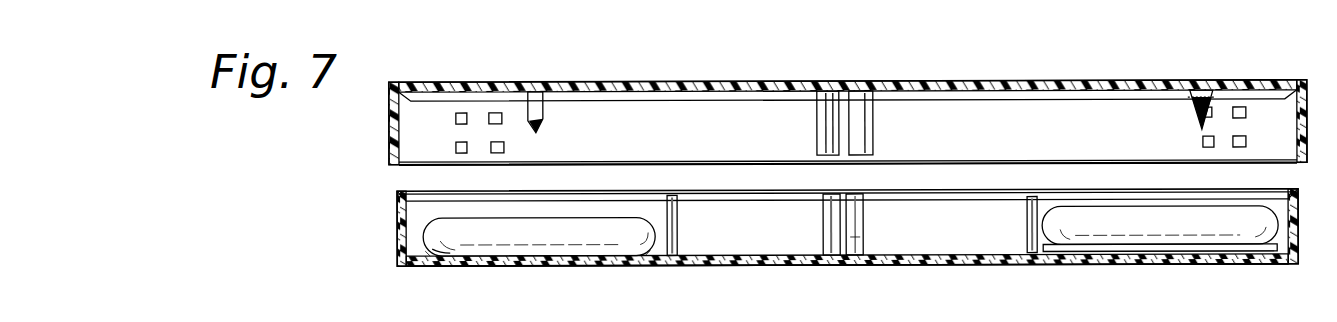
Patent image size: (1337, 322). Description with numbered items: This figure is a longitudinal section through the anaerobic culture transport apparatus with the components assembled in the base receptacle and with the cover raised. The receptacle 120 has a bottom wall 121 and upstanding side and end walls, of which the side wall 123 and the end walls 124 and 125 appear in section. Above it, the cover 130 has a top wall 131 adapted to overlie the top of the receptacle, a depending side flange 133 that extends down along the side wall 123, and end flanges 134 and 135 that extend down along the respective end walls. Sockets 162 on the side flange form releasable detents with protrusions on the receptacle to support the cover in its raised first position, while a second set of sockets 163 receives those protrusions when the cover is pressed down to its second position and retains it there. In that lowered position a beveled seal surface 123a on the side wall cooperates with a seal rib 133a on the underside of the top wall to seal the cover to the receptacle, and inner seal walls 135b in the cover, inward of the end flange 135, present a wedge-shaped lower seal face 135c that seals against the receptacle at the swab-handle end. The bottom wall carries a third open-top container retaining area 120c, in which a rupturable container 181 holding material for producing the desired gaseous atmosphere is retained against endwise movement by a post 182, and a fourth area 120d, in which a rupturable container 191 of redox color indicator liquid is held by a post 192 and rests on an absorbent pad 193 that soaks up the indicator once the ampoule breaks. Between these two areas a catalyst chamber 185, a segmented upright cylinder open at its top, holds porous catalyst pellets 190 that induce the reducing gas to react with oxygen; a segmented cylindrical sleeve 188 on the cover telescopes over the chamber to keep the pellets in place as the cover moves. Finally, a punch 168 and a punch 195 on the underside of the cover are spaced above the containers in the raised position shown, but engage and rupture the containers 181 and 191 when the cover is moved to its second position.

The cover 130 is at (903, 72).
The top wall 131 is at (968, 82).
The side flange 133 is at (1042, 118).
The seal rib 133a is at (703, 112).
The end flange 134 is at (1306, 100).
The end flange 135 is at (389, 136).
The inner seal walls 135b is at (421, 319).
The wedge-shaped lower seal face 135c is at (470, 321).
The second set of sockets 163 is at (497, 112).
The punch 168 is at (548, 118).
The sockets 162 is at (504, 151).
The segmented cylindrical sleeve 188 is at (873, 136).
The punch 195 is at (1200, 128).
The receptacle 120 is at (900, 268).
The bottom wall 121 is at (748, 262).
The side wall 123 is at (939, 208).
The beveled seal surface 123a is at (653, 190).
The end wall 124 is at (1300, 236).
The end wall 125 is at (397, 232).
The rupturable container 181 is at (538, 226).
The post 182 is at (678, 222).
The catalyst chamber 185 is at (867, 202).
The catalyst pellets 190 is at (867, 235).
The post 192 is at (1028, 216).
The rupturable container 191 is at (1158, 212).
The absorbent pad 193 is at (1075, 240).
The third open-top container retaining area 120c is at (561, 245).
The fourth open-top container retaining area 120d is at (1138, 238).